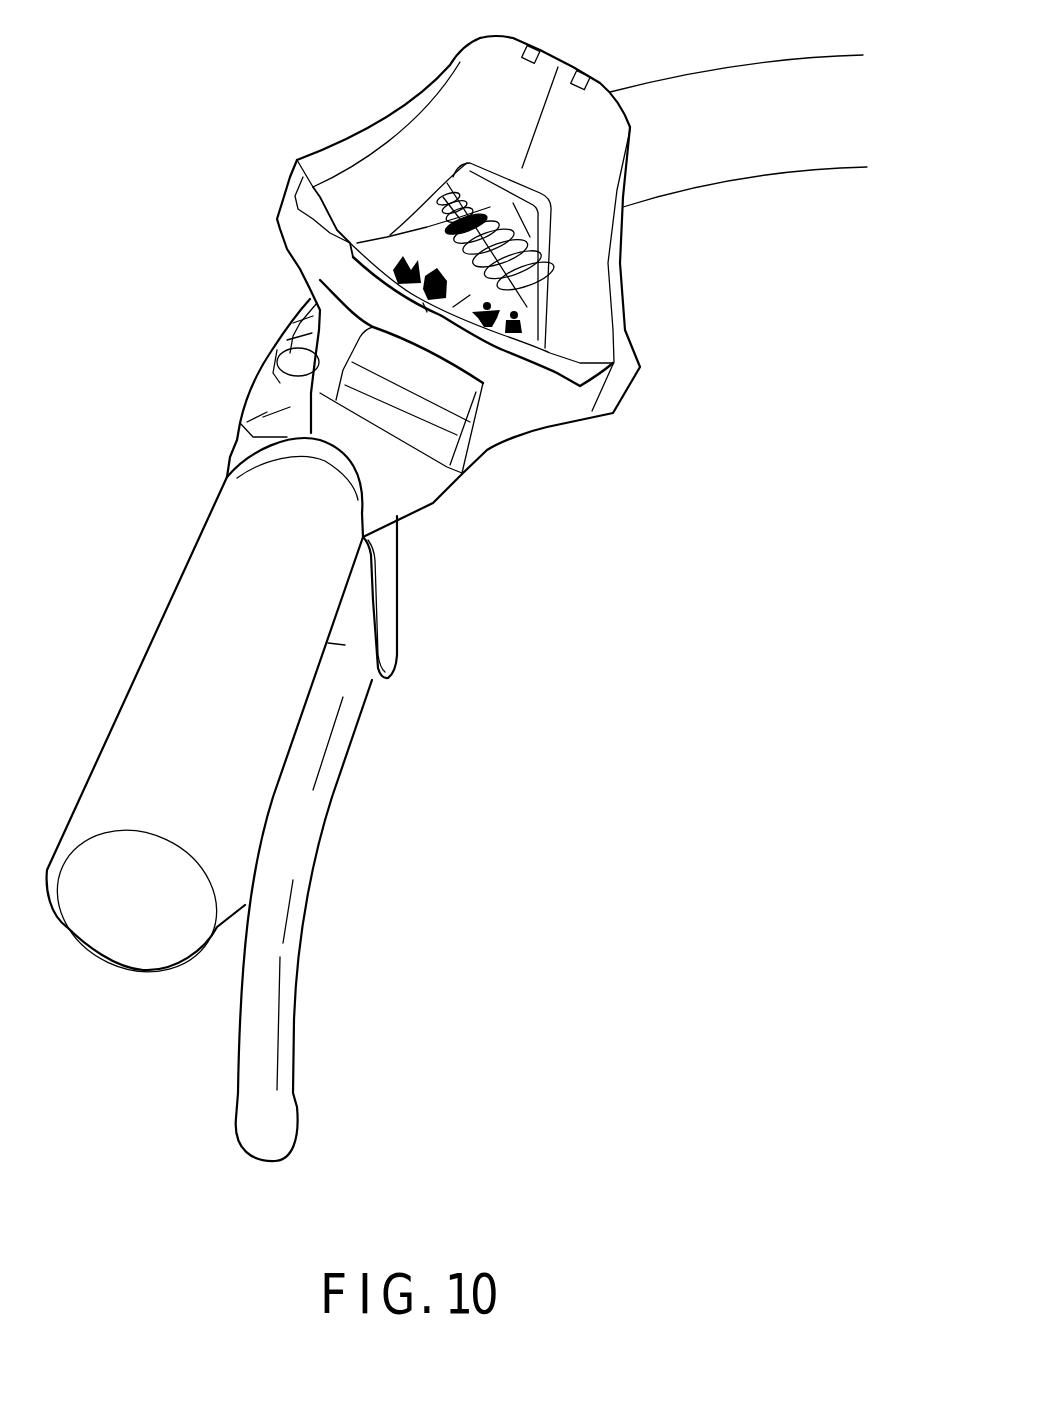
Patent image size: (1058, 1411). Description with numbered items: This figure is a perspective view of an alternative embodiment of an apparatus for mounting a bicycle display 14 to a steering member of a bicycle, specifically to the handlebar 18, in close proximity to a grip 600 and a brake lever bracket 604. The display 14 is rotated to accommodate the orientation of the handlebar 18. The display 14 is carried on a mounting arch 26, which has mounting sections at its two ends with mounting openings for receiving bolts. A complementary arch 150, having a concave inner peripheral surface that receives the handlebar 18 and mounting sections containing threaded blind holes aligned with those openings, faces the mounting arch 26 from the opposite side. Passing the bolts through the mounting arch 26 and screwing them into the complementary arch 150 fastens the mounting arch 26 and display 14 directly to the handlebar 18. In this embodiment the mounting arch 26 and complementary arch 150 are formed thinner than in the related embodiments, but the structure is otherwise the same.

The display 14 is at (506, 294).
The handlebar 18 is at (722, 165).
The mounting arch 26 is at (405, 490).
The complementary arch 150 is at (240, 447).
The grip 600 is at (157, 650).
The brake lever bracket 604 is at (390, 602).